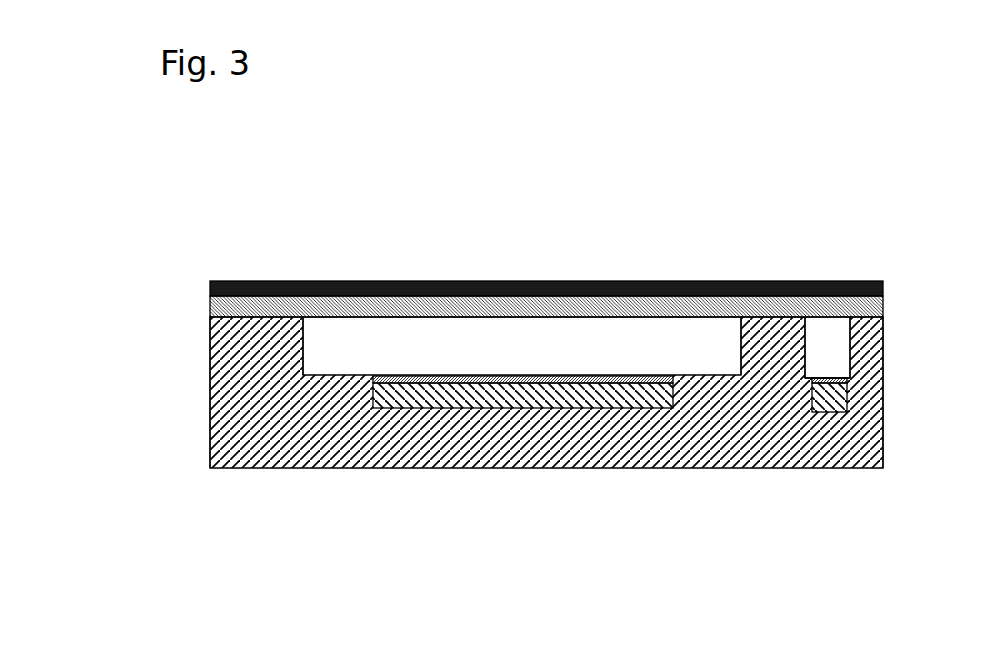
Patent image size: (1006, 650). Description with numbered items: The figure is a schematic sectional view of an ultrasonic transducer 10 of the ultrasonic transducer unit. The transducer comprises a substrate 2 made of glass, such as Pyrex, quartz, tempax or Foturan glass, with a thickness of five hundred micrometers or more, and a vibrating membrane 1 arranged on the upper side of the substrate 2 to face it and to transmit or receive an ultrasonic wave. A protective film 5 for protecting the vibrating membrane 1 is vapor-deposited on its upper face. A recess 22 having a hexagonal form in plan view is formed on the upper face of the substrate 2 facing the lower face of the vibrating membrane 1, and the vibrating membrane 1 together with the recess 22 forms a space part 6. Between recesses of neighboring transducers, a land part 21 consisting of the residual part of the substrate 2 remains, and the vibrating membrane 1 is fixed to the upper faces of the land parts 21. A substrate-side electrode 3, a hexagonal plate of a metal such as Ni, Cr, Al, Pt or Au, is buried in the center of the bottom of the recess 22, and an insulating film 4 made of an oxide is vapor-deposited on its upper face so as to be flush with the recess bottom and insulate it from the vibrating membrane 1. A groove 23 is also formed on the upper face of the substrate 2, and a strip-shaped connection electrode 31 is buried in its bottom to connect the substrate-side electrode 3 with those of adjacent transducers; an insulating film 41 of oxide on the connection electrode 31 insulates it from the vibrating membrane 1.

The ultrasonic transducer 10 is at (207, 243).
The vibrating membrane 1 is at (742, 292).
The protective film 5 is at (305, 282).
The space part 6 is at (428, 327).
The substrate 2 is at (562, 462).
The land part 21 is at (218, 350).
The recess 22 is at (738, 352).
The groove 23 is at (843, 344).
The connection electrode 31 is at (815, 405).
The insulating film 41 is at (832, 378).
The insulating film 4 is at (507, 377).
The substrate-side electrode 3 is at (629, 385).